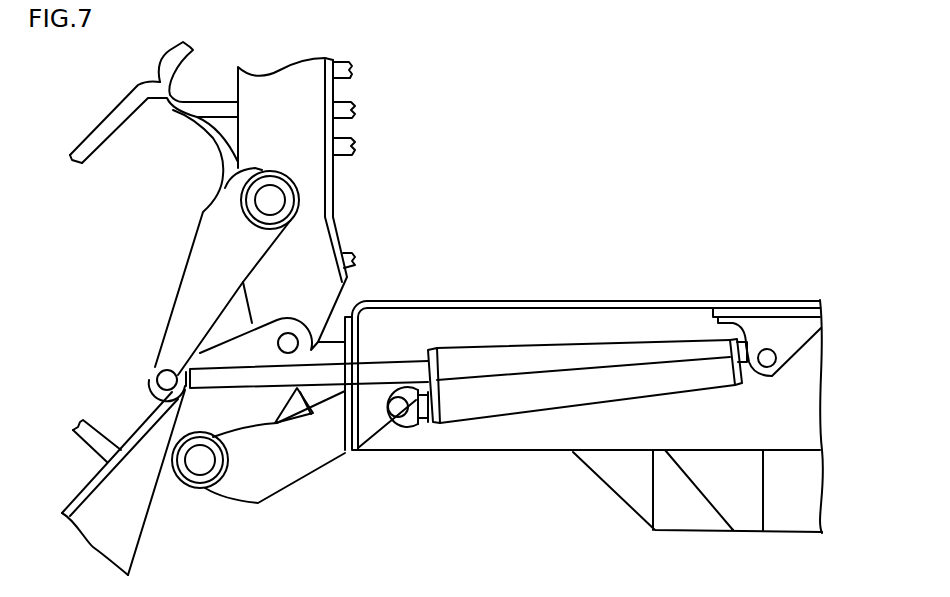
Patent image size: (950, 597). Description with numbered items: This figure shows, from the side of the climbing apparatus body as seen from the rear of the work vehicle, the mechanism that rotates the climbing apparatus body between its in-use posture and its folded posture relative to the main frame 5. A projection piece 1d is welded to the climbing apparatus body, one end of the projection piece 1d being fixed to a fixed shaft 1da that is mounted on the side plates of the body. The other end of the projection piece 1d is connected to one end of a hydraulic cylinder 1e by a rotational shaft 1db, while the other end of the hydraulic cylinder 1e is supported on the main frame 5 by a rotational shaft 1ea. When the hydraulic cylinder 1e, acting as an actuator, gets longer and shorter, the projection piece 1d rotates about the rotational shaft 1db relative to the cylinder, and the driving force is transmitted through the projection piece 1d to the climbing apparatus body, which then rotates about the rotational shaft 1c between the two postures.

The main frame 5 is at (598, 299).
The rotational shaft 1c is at (292, 348).
The projection piece 1d is at (213, 248).
The fixed shaft 1da is at (268, 201).
The rotational shaft 1db is at (165, 382).
The hydraulic cylinder 1e is at (518, 400).
The rotational shaft 1ea is at (768, 356).